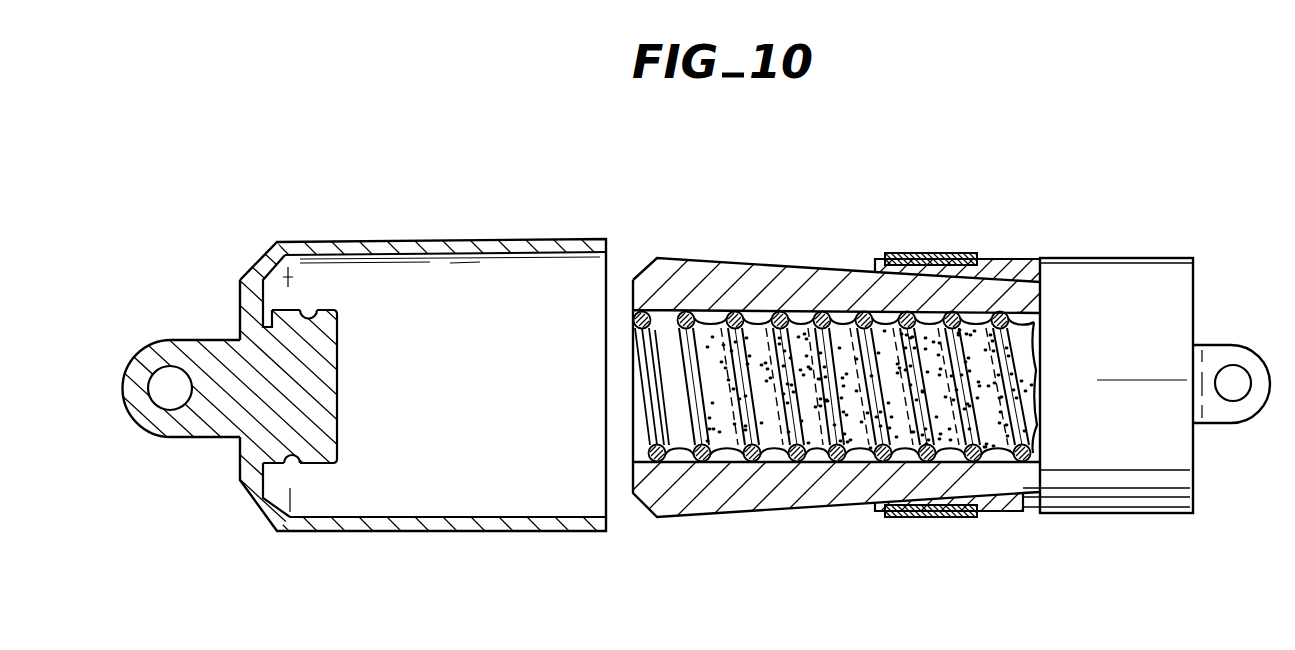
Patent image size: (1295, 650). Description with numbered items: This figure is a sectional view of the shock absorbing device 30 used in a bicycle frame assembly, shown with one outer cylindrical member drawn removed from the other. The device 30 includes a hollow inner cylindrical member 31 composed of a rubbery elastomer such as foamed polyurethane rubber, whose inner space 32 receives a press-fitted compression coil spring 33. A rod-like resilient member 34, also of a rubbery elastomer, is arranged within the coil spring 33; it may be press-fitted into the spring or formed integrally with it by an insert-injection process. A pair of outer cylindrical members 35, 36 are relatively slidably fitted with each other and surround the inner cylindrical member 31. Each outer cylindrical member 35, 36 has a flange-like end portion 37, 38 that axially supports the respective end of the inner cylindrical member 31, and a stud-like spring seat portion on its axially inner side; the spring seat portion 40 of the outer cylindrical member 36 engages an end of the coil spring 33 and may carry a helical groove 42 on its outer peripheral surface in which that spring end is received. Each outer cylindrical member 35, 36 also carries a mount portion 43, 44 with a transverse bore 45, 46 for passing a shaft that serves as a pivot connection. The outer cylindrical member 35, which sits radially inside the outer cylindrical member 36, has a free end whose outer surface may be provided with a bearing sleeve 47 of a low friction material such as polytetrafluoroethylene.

The shock absorbing device 30 is at (560, 557).
The inner cylindrical member 31 is at (719, 282).
The inner space 32 is at (676, 440).
The compression coil spring 33 is at (645, 392).
The resilient member 34 is at (815, 443).
The outer cylindrical member 35 is at (1010, 267).
The outer cylindrical member 36 is at (461, 247).
The flange-like end portion 37 is at (1196, 257).
The flange-like end portion 38 is at (257, 262).
The spring seat portion 40 is at (330, 387).
The helical groove 42 is at (309, 324).
The mount portion 43 is at (1233, 355).
The mount portion 44 is at (170, 346).
The transverse bore 45 is at (1237, 392).
The transverse bore 46 is at (172, 397).
The bearing sleeve 47 is at (912, 255).